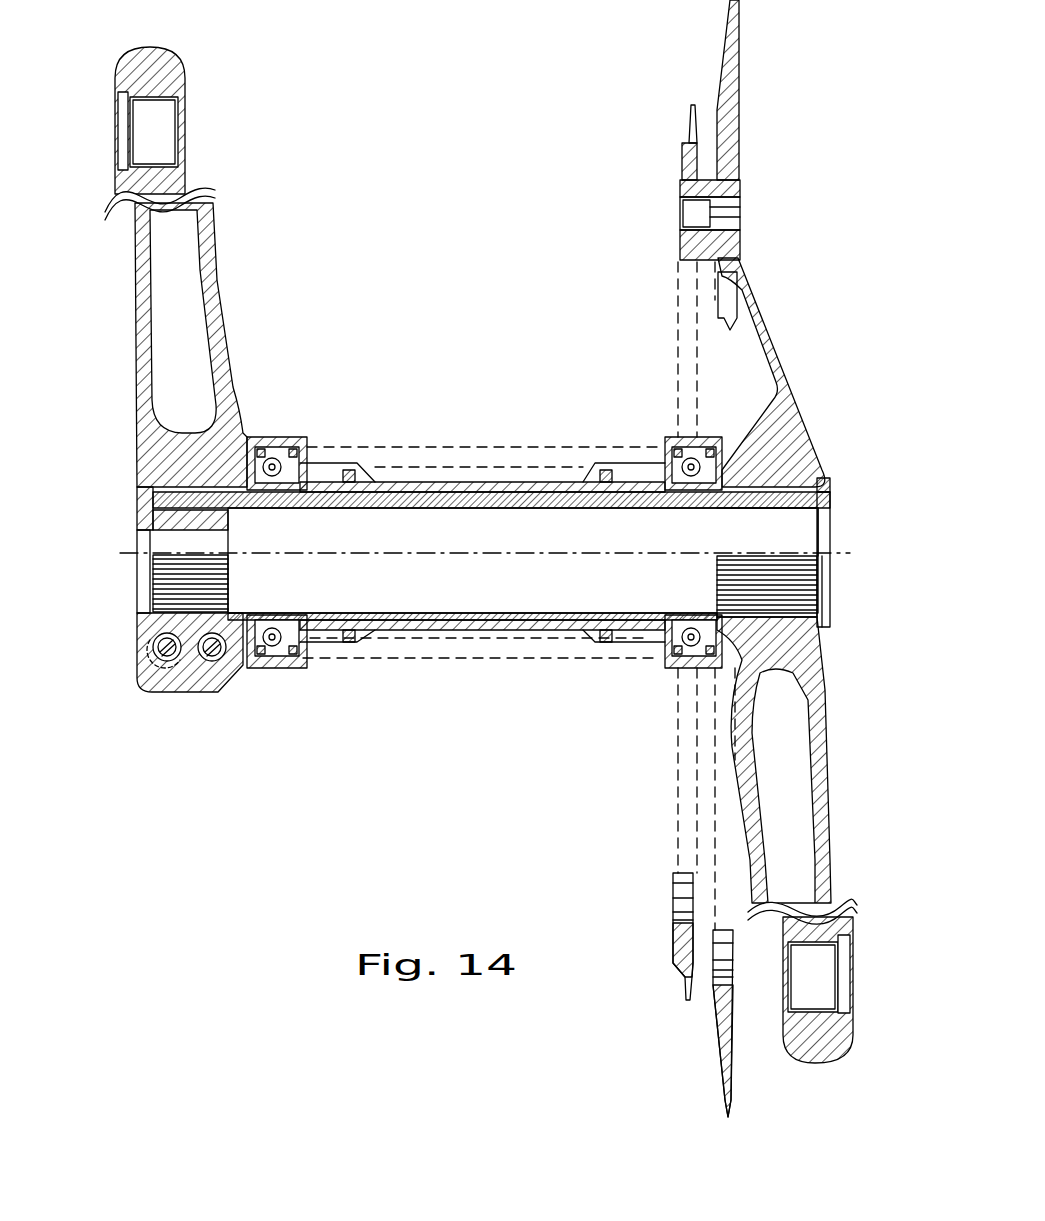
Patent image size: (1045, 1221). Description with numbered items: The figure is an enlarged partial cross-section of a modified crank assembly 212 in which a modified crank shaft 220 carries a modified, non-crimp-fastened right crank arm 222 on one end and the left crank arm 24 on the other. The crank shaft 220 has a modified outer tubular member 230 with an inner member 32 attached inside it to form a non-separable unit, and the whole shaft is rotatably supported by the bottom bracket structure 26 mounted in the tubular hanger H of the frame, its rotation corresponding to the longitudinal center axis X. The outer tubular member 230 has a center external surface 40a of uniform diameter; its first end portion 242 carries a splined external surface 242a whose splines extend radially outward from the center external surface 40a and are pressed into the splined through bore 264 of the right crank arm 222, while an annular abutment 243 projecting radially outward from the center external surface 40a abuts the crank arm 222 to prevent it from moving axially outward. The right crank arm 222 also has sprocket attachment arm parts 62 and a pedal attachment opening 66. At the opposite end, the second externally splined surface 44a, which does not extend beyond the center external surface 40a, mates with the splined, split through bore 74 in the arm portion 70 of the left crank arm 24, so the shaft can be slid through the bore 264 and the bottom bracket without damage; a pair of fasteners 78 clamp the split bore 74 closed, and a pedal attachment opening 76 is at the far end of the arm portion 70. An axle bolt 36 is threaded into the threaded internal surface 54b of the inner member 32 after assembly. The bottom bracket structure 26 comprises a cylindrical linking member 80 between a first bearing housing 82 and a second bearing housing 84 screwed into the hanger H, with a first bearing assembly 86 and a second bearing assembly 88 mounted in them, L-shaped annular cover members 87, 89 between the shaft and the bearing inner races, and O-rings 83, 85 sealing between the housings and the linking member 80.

The left crank arm 24 is at (203, 413).
The bottom bracket structure 26 is at (667, 768).
The inner member 32 is at (501, 537).
The axle bolt 36 is at (143, 508).
The center external surface 40a is at (477, 583).
The second externally splined surface 44a is at (150, 575).
The threaded internal surface 54b is at (152, 534).
The sprocket attachment arm parts 62 is at (804, 372).
The pedal attachment opening 66 is at (810, 834).
The arm portion 70 is at (207, 243).
The splined split through bore 74 is at (133, 612).
The pedal attachment opening 76 is at (155, 112).
The fasteners 78 is at (176, 664).
The cylindrical linking member 80 is at (453, 628).
The first bearing housing 82 is at (633, 658).
The O-ring 83 is at (590, 656).
The second bearing housing 84 is at (323, 642).
The O-ring 85 is at (355, 642).
The first bearing assembly 86 is at (665, 662).
The annular cover member 87 is at (712, 668).
The second bearing assembly 88 is at (283, 665).
The annular cover member 89 is at (240, 663).
The modified crank assembly 212 is at (783, 252).
The modified crank shaft 220 is at (840, 475).
The modified right crank arm 222 is at (770, 318).
The modified outer tubular member 230 is at (842, 487).
The first end portion 242 is at (778, 505).
The splined external surface 242a is at (792, 578).
The annular abutment 243 is at (823, 628).
The splined through bore 264 is at (788, 606).
The hanger H is at (497, 455).
The longitudinal center axis X is at (433, 557).